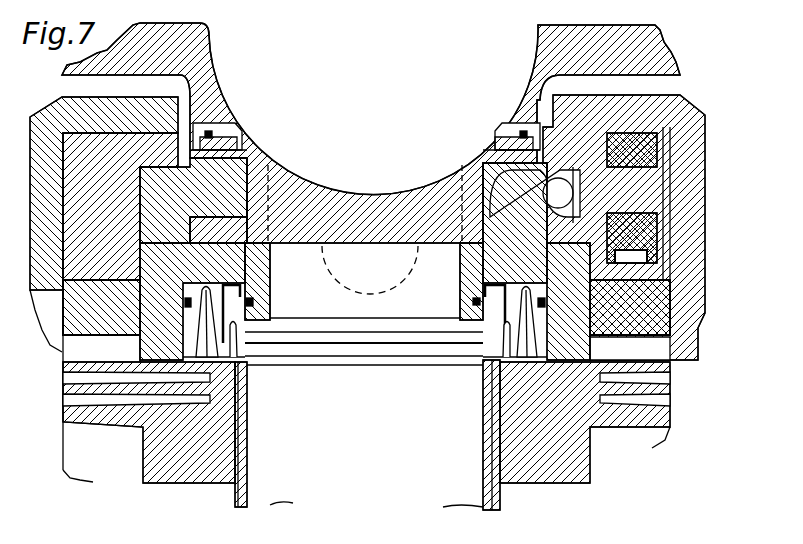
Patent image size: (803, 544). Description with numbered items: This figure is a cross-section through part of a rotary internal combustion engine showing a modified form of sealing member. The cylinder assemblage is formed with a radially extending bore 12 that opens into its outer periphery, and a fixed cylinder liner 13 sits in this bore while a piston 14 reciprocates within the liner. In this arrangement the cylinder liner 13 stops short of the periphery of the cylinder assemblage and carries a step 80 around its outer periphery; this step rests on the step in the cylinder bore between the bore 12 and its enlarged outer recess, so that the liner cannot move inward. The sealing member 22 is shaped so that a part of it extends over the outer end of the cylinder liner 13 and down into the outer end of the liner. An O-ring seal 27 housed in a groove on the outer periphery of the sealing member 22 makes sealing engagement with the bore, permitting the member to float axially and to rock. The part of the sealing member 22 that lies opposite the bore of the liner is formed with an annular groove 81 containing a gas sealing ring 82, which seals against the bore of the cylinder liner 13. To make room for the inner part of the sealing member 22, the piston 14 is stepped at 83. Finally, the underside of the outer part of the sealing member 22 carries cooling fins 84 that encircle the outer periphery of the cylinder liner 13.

The bore 12 is at (503, 497).
The cylinder liner 13 is at (483, 410).
The piston 14 is at (293, 260).
The sealing member 22 is at (490, 265).
The O-ring seal 27 is at (550, 275).
The step 80 is at (498, 328).
The annular groove 81 is at (486, 312).
The gas sealing ring 82 is at (470, 302).
The step 83 is at (246, 297).
The cooling fins 84 is at (560, 328).